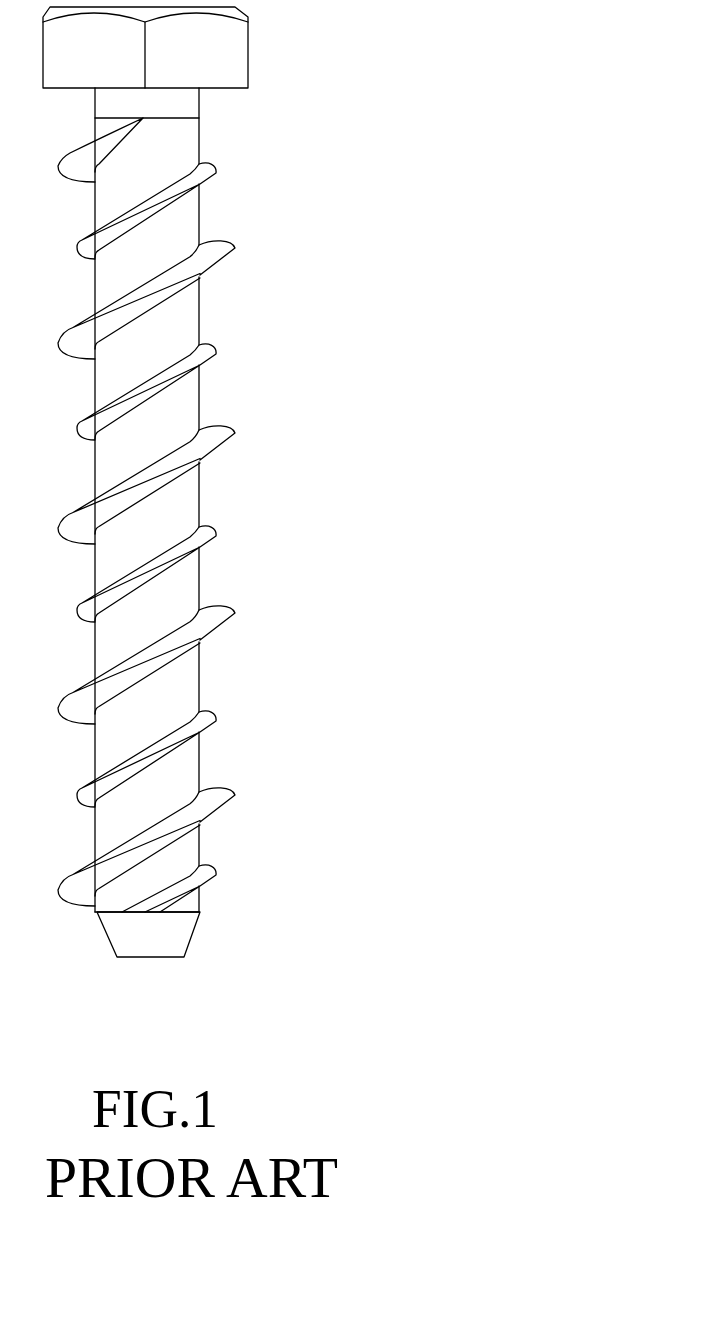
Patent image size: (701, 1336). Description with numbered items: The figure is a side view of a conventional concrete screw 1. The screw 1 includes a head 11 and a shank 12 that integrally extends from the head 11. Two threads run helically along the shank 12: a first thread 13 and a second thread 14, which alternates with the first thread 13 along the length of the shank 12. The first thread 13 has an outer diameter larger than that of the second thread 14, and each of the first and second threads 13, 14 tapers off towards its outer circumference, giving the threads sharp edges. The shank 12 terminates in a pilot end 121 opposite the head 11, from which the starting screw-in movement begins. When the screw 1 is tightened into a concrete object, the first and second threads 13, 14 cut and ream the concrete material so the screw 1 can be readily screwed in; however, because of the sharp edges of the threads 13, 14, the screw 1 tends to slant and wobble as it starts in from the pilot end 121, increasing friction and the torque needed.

The concrete screw 1 is at (244, 489).
The head 11 is at (235, 47).
The shank 12 is at (196, 137).
The first thread 13 is at (222, 246).
The second thread 14 is at (208, 350).
The pilot end 121 is at (182, 935).